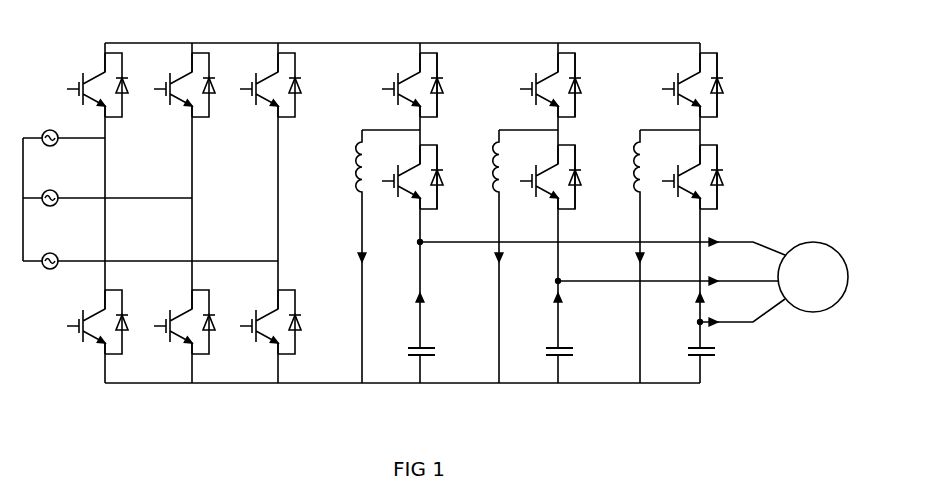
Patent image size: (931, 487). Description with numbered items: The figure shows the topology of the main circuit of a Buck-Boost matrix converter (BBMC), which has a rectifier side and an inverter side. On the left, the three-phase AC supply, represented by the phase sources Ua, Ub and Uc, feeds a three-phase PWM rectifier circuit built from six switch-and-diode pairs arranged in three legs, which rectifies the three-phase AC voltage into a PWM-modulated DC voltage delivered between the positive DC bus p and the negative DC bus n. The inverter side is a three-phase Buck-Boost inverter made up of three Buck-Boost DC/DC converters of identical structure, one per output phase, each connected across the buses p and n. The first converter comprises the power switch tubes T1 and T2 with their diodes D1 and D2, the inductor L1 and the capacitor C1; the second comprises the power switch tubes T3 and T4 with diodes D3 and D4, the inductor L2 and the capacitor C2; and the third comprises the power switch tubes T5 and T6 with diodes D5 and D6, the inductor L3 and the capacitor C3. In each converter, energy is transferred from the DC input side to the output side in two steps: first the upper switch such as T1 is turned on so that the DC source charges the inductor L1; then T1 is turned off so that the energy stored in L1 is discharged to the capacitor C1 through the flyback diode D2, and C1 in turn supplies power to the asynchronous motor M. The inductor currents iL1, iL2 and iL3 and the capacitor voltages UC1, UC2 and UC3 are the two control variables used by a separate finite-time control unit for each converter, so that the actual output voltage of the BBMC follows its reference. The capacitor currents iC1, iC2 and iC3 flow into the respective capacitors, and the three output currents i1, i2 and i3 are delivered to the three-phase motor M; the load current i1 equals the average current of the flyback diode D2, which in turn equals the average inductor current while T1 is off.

The positive DC bus p is at (402, 28).
The negative DC bus n is at (402, 370).
The phase A AC voltage source Ua is at (64, 123).
The phase B AC voltage source Ub is at (107, 183).
The phase C AC voltage source Uc is at (150, 246).
The power switch tube T1 is at (406, 82).
The power switch tube T2 is at (406, 175).
The power switch tube T3 is at (543, 82).
The power switch tube T4 is at (543, 175).
The power switch tube T5 is at (684, 82).
The power switch tube T6 is at (684, 175).
The diode D1 is at (453, 85).
The flyback diode D2 is at (453, 177).
The diode D3 is at (592, 85).
The diode D4 is at (592, 177).
The diode D5 is at (734, 85).
The diode D6 is at (734, 177).
The inductor L1 is at (344, 256).
The inductor L2 is at (483, 256).
The inductor L3 is at (626, 256).
The capacitor C1 is at (407, 350).
The capacitor C2 is at (543, 350).
The capacitor C3 is at (684, 350).
The inductor current iL1 is at (345, 259).
The inductor current iL2 is at (484, 264).
The inductor current iL3 is at (619, 260).
The capacitor current iC1 is at (400, 299).
The capacitor current iC2 is at (538, 299).
The capacitor current iC3 is at (681, 303).
The capacitor voltage UC1 is at (452, 355).
The capacitor voltage UC2 is at (590, 355).
The capacitor voltage UC3 is at (732, 355).
The output current i1 is at (602, 234).
The output current i2 is at (667, 269).
The output current i3 is at (742, 311).
The asynchronous motor M is at (813, 277).